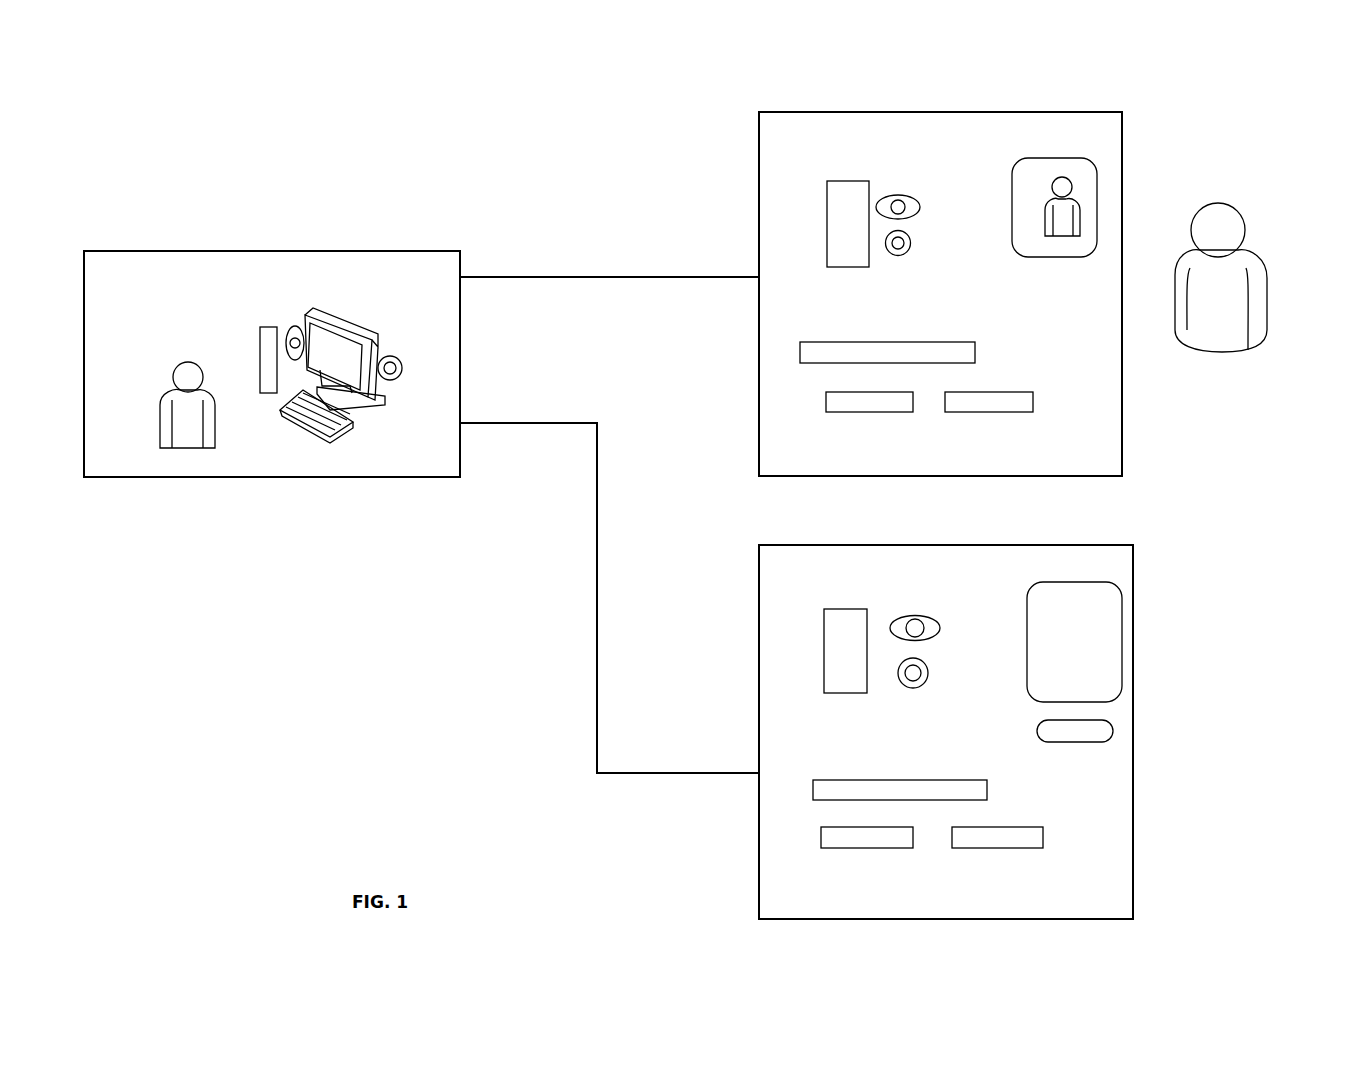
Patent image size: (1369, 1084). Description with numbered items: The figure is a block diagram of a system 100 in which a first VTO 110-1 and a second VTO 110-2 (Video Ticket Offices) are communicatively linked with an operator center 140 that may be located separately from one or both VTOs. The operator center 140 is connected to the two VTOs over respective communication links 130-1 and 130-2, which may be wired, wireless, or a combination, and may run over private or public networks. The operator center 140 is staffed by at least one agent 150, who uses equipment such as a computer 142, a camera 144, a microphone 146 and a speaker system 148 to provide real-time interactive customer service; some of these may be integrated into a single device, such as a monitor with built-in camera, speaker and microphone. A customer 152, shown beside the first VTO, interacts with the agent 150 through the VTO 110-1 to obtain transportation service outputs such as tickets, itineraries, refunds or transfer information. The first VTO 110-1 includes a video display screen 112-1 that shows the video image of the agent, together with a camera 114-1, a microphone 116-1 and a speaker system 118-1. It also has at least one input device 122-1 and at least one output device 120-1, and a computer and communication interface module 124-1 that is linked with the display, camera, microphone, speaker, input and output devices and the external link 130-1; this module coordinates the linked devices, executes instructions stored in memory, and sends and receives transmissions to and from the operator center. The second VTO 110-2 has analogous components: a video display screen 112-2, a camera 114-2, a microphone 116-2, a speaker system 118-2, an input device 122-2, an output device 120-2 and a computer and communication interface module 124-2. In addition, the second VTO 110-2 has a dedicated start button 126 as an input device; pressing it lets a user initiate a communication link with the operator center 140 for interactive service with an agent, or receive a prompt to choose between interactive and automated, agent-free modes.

The system 100 is at (418, 128).
The first VTO 110-1 is at (1050, 112).
The second VTO 110-2 is at (1133, 559).
The video display screen 112-1 is at (1070, 158).
The video display screen 112-2 is at (1085, 582).
The camera 114-1 is at (900, 197).
The camera 114-2 is at (915, 616).
The microphone 116-1 is at (905, 253).
The microphone 116-2 is at (920, 686).
The speaker system 118-1 is at (850, 181).
The speaker system 118-2 is at (850, 609).
The output device 120-1 is at (1010, 412).
The output device 120-2 is at (1028, 848).
The input device 122-1 is at (893, 412).
The input device 122-2 is at (873, 848).
The computer and communication interface module 124-1 is at (873, 342).
The computer and communication interface module 124-2 is at (887, 780).
The start button 126 is at (1085, 742).
The communication link 130-1 is at (527, 277).
The communication link 130-2 is at (548, 423).
The operator center 140 is at (290, 251).
The computer 142 is at (352, 322).
The camera 144 is at (291, 334).
The microphone 146 is at (402, 374).
The speaker system 148 is at (258, 338).
The agent 150 is at (173, 378).
The customer 152 is at (1245, 215).